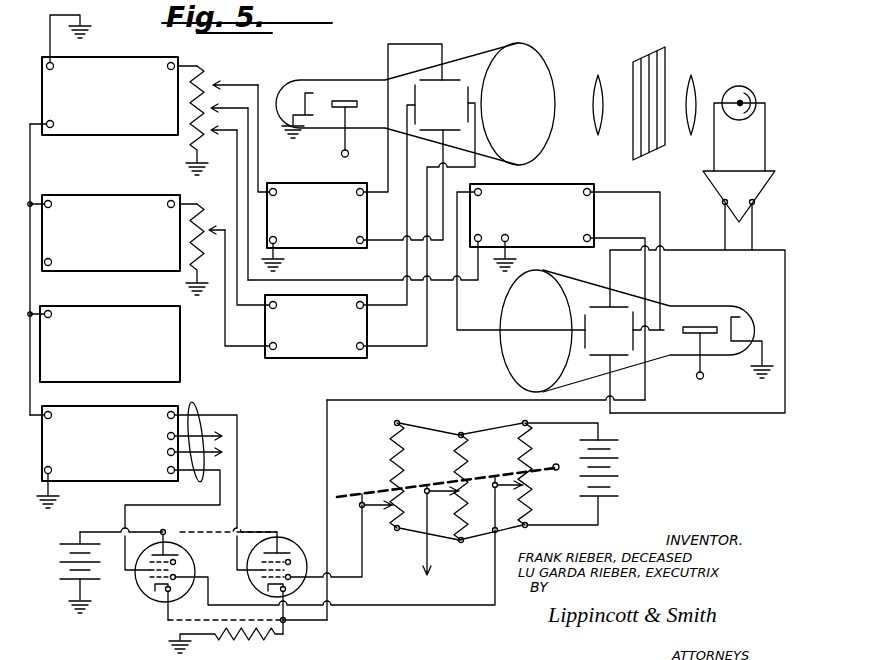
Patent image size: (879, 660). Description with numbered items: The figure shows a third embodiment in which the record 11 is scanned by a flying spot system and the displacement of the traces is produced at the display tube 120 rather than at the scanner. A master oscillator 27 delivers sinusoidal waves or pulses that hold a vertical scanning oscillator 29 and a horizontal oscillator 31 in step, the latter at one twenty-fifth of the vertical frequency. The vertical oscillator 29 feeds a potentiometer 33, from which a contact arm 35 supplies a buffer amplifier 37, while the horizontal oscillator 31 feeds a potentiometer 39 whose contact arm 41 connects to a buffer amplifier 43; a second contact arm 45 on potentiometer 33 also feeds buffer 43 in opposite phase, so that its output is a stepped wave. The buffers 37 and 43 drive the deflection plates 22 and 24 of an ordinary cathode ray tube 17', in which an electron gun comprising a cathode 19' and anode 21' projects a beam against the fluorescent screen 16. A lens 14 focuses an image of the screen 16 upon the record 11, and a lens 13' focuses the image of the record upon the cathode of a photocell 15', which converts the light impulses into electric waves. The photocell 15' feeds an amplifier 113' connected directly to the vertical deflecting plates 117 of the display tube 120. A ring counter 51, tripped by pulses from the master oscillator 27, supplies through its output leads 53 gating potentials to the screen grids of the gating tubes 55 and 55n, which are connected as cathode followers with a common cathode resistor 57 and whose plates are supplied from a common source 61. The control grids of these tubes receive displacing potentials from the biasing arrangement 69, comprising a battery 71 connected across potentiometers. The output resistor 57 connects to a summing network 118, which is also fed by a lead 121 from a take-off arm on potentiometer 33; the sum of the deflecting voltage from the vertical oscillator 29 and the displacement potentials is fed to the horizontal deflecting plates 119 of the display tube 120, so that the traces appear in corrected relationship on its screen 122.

The vertical scanning oscillator 29 is at (104, 136).
The horizontal oscillator 31 is at (114, 200).
The master oscillator 27 is at (172, 363).
The ring counter 51 is at (104, 483).
The output leads 53 is at (205, 410).
The potentiometer 33 is at (189, 143).
The contact arm 35 is at (228, 85).
The contact arm 45 is at (217, 132).
The potentiometer 39 is at (190, 272).
The contact arm 41 is at (222, 233).
The buffer amplifier 37 is at (307, 191).
The buffer amplifier 43 is at (316, 357).
The cathode ray tube 17' is at (397, 92).
The fluorescent screen 16 is at (537, 55).
The cathode 19' is at (297, 96).
The anode 21' is at (343, 106).
The deflection plates 24 is at (471, 87).
The deflection plates 22 is at (441, 128).
The lens 14 is at (595, 78).
The record 11 is at (650, 52).
The lens 13' is at (696, 92).
The photocell 15' is at (739, 113).
The amplifier 113' is at (722, 210).
The summing network 118 is at (574, 191).
The lead 121 is at (478, 284).
The screen 122 is at (511, 366).
The vertical deflecting plates 117 is at (609, 331).
The horizontal deflecting plates 119 is at (638, 336).
The display tube 120 is at (662, 360).
The common source 61 is at (64, 556).
The gating tube 55 is at (142, 588).
The gating tube 55n is at (300, 535).
The cathode resistor 57 is at (270, 640).
The biasing circuits 69 is at (560, 504).
The battery 71 is at (611, 493).